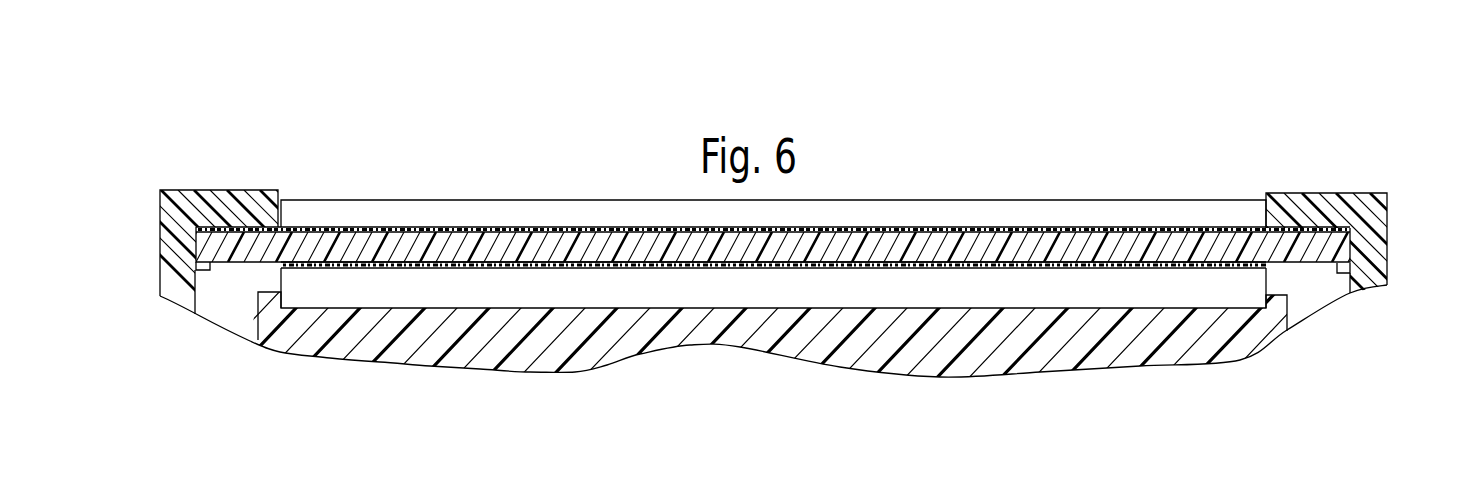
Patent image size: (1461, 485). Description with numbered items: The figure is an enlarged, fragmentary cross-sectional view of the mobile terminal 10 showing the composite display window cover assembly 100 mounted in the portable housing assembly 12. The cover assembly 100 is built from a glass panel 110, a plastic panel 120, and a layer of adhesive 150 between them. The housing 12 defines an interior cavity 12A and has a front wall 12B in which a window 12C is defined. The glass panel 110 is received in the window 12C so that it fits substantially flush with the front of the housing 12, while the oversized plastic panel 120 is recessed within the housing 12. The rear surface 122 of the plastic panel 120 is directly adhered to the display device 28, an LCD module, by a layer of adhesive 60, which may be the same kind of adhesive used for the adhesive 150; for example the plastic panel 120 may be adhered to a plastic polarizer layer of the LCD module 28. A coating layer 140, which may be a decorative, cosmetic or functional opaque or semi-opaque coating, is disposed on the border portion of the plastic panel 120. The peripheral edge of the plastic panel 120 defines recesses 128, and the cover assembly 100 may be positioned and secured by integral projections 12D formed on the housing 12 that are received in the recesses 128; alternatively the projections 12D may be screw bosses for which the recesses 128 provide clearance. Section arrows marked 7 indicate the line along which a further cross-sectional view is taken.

The mobile terminal 10 is at (449, 98).
The portable housing assembly 12 is at (160, 282).
The interior cavity 12A is at (1301, 302).
The front wall 12B is at (265, 191).
The window 12C is at (280, 198).
The integral projections 12D is at (196, 240).
The display device 28 is at (1072, 288).
The layer of adhesive 60 is at (1152, 268).
The composite display window cover assembly 100 is at (529, 176).
The glass panel 110 is at (943, 208).
The plastic panel 120 is at (710, 250).
The rear surface 122 is at (842, 263).
The recesses 128 is at (226, 264).
The coating layer 140 is at (237, 222).
The layer of adhesive 150 is at (1043, 228).
The section line 7 is at (1317, 285).